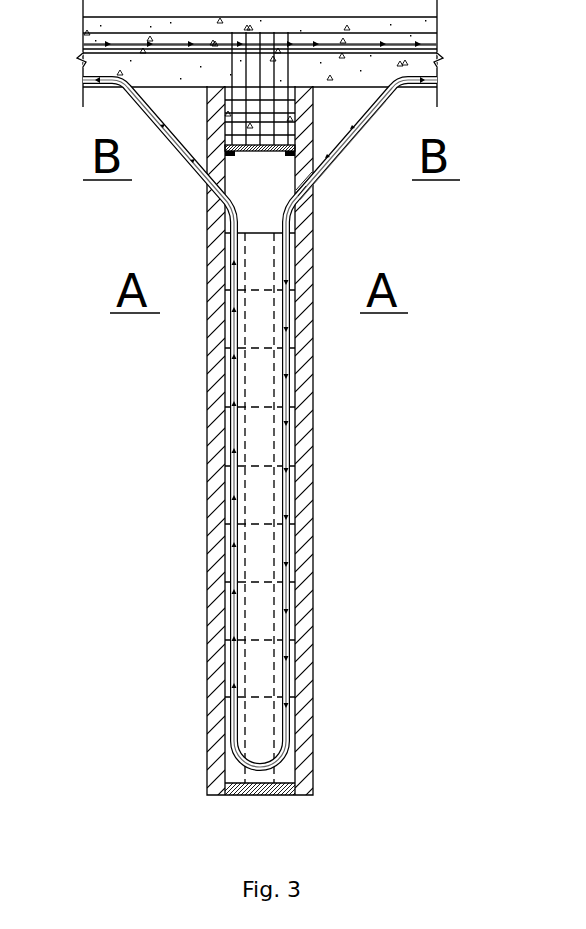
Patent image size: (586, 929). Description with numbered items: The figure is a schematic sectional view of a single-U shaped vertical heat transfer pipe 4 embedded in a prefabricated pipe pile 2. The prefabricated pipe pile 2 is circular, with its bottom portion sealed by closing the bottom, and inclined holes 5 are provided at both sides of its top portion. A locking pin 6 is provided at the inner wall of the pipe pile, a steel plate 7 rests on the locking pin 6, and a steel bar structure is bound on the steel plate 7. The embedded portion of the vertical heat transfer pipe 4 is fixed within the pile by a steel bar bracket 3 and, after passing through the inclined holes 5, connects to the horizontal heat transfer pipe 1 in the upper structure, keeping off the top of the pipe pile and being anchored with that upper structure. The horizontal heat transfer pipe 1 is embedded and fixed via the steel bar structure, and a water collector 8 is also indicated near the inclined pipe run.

The horizontal heat transfer pipe 1 is at (427, 43).
The prefabricated pipe pile 2 is at (307, 413).
The steel bar bracket 3 is at (285, 485).
The vertical heat transfer pipe 4 is at (258, 582).
The inclined hole 5 is at (305, 185).
The locking pin 6 is at (263, 153).
The steel plate 7 is at (307, 178).
The water collector 8 is at (317, 163).